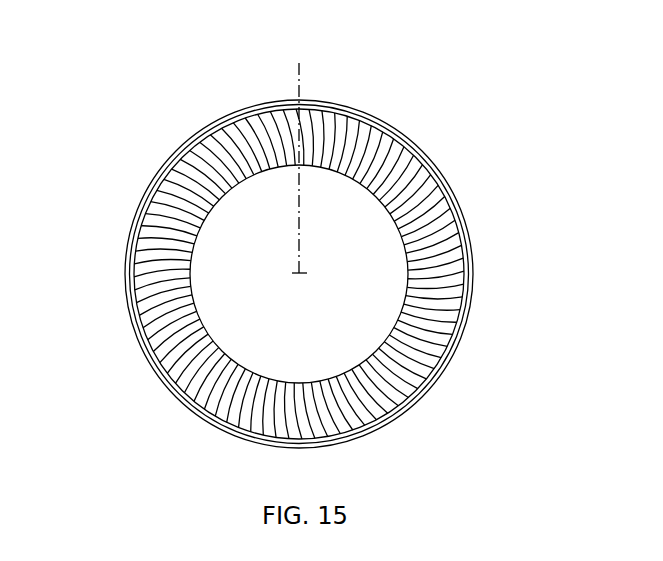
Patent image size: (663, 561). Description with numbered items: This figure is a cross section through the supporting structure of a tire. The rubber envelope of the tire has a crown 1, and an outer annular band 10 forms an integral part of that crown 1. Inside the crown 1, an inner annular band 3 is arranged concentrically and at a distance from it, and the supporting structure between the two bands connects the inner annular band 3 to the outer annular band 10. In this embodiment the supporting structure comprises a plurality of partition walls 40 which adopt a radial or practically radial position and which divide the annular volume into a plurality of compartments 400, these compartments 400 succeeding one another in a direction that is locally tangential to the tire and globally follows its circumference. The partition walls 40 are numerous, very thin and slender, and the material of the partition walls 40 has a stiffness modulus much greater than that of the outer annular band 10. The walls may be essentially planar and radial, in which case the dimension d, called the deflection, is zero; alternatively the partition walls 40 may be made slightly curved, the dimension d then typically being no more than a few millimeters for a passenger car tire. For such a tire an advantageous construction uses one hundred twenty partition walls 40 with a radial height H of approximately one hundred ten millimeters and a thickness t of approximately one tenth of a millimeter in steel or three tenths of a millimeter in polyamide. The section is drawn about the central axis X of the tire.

The crown 1 is at (284, 236).
The outer annular band 10 is at (320, 101).
The inner annular band 3 is at (212, 335).
The partition walls 40 is at (160, 205).
The compartments 400 is at (140, 282).
The central axis X is at (302, 276).
The radial height H is at (378, 310).
The deflection d is at (280, 132).
The thickness t is at (180, 180).